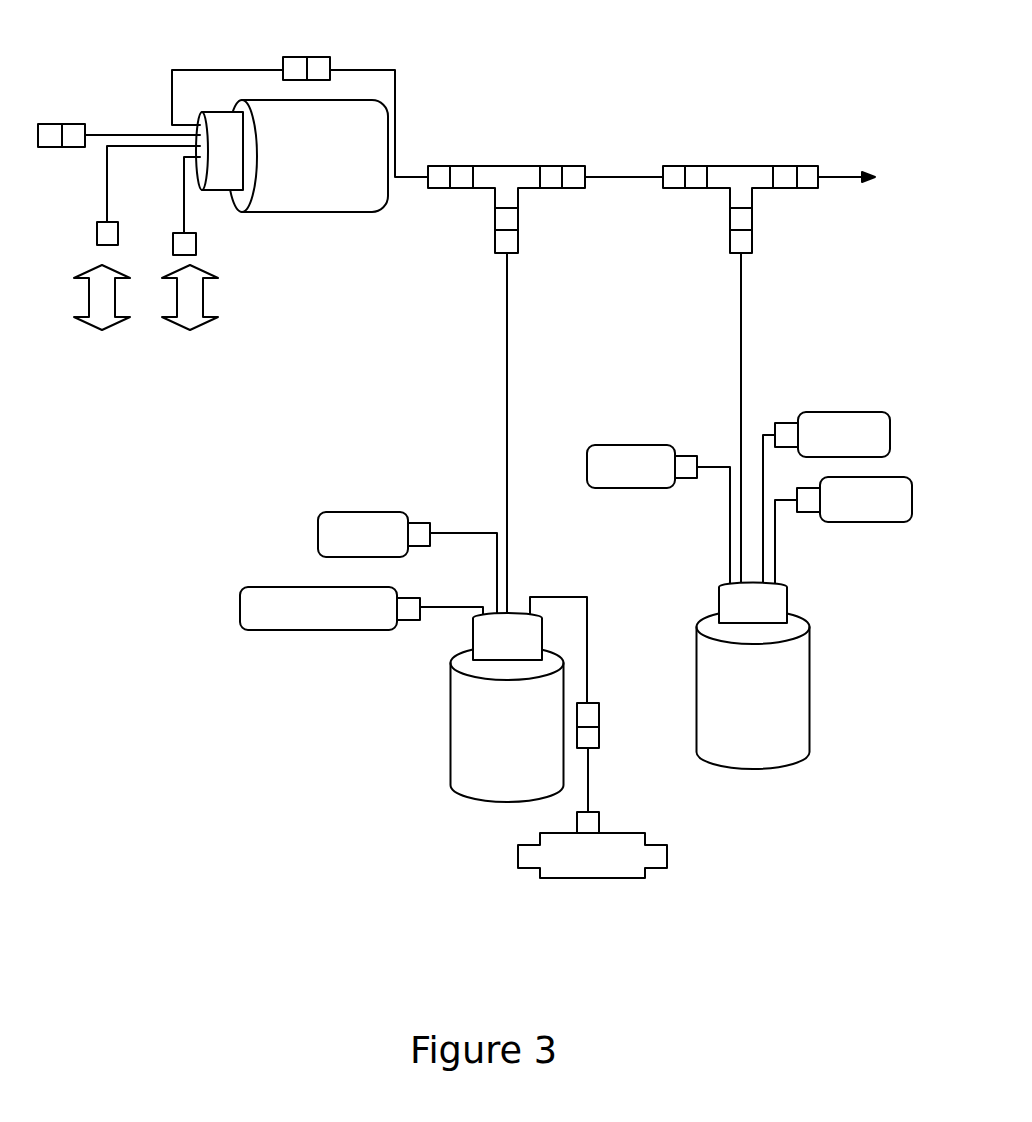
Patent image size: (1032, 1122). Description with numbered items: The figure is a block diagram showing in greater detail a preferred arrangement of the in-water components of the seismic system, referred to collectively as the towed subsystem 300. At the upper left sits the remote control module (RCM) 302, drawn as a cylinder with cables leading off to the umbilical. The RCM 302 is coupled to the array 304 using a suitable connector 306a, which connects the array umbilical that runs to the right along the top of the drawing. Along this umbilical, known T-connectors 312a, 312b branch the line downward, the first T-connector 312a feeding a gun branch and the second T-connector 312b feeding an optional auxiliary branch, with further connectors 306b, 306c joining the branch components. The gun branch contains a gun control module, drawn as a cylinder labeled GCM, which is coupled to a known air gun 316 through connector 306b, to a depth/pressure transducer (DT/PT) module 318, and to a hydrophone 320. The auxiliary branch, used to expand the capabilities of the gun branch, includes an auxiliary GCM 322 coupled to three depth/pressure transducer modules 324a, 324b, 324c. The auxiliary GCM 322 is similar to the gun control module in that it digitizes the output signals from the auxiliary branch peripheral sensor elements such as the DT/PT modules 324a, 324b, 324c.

The towed subsystem 300 is at (312, 798).
The remote control module (RCM) 302 is at (320, 212).
The array 304 is at (646, 88).
The connector 306a is at (295, 57).
The connector 306b is at (595, 702).
The connector 306c is at (727, 218).
The T-connector 312a is at (517, 166).
The T-connector 312b is at (728, 163).
The air gun 316 is at (600, 878).
The depth/pressure transducer module 318 is at (397, 512).
The hydrophone 320 is at (363, 632).
The auxiliary GCM 322 is at (740, 768).
The depth/pressure transducer module 324a is at (652, 488).
The depth/pressure transducer module 324b is at (807, 412).
The depth/pressure transducer module 324c is at (833, 522).